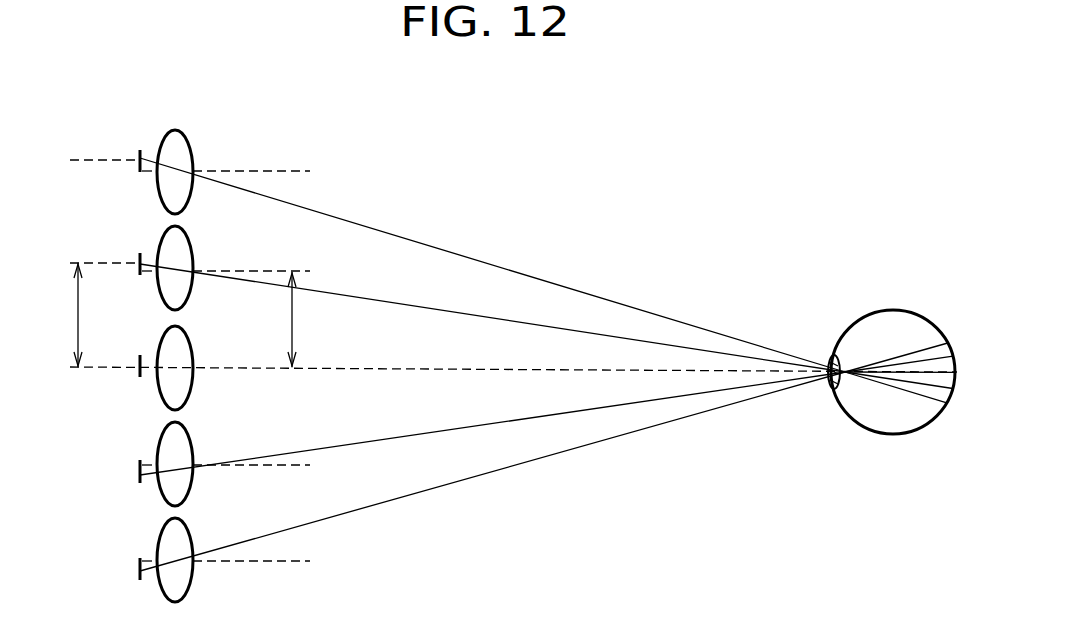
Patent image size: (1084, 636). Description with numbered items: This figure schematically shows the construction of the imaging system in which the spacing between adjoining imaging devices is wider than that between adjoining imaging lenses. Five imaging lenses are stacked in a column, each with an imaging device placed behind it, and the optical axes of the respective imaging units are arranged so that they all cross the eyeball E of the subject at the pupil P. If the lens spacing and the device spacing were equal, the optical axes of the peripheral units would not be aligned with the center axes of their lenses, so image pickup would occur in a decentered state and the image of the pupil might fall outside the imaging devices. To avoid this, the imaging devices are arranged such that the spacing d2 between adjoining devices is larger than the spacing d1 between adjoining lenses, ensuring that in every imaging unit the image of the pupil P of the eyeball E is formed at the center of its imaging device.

The spacing between adjoining imaging lenses d1 is at (296, 319).
The spacing between adjoining imaging devices d2 is at (83, 315).
The eyeball E is at (887, 276).
The pupil P is at (818, 404).